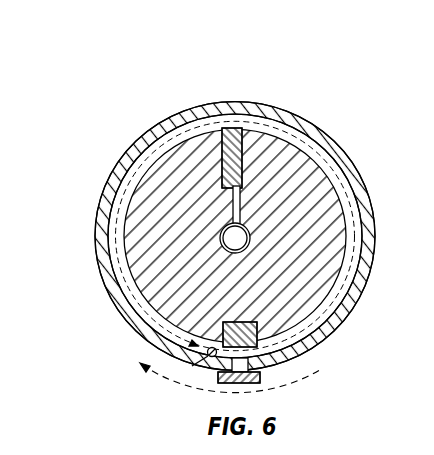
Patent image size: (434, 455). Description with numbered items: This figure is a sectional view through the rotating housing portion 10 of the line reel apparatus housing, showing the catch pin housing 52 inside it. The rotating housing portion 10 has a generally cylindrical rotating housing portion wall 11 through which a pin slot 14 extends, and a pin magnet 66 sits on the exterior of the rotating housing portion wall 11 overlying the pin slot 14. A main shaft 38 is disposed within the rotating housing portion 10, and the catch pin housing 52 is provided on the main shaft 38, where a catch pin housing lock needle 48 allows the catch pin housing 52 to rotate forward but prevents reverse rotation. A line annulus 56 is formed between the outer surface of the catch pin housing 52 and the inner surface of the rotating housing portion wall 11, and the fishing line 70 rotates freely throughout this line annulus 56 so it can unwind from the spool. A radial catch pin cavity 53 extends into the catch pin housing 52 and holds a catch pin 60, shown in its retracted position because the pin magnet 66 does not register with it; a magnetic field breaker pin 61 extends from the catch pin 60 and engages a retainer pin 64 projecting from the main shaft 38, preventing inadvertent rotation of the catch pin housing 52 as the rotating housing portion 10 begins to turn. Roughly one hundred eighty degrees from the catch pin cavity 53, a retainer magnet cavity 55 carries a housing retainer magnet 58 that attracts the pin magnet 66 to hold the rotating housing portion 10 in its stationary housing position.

The rotating housing portion 10 is at (303, 112).
The rotating housing portion wall 11 is at (317, 137).
The pin slot 14 is at (220, 378).
The main shaft 38 is at (233, 239).
The catch pin housing lock needle 48 is at (222, 241).
The catch pin housing 52 is at (165, 124).
The catch pin cavity 53 is at (226, 128).
The retainer magnet cavity 55 is at (227, 322).
The line annulus 56 is at (117, 190).
The housing retainer magnet 58 is at (308, 360).
The catch pin 60 is at (238, 166).
The magnetic field breaker pin 61 is at (247, 156).
The retainer pin 64 is at (232, 212).
The pin magnet 66 is at (260, 379).
The fishing line 70 is at (192, 367).